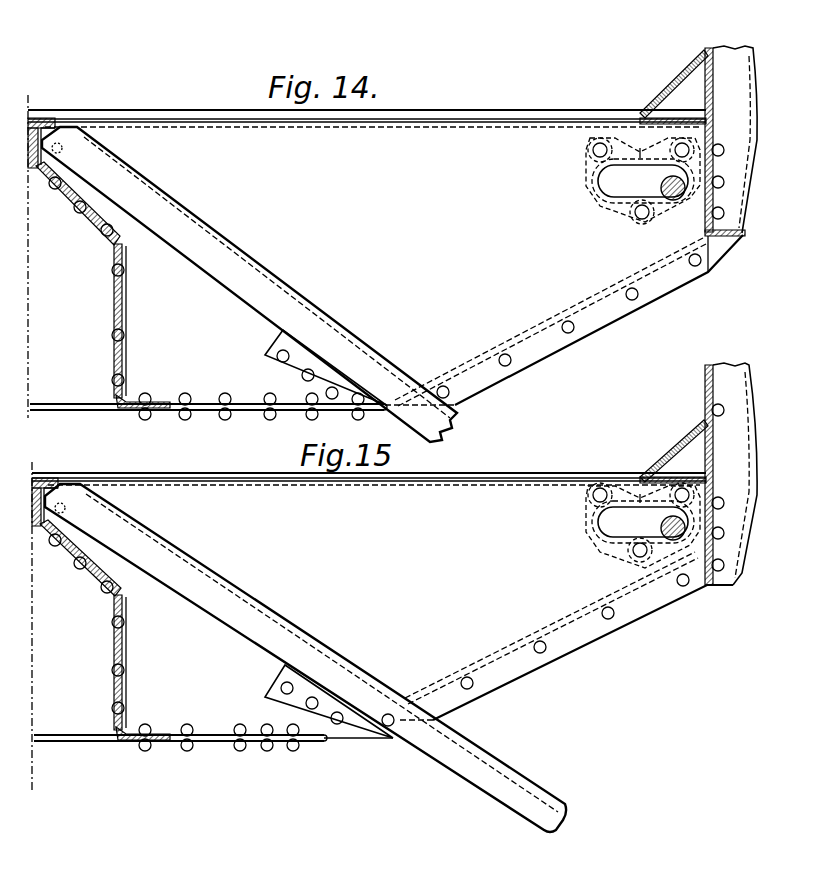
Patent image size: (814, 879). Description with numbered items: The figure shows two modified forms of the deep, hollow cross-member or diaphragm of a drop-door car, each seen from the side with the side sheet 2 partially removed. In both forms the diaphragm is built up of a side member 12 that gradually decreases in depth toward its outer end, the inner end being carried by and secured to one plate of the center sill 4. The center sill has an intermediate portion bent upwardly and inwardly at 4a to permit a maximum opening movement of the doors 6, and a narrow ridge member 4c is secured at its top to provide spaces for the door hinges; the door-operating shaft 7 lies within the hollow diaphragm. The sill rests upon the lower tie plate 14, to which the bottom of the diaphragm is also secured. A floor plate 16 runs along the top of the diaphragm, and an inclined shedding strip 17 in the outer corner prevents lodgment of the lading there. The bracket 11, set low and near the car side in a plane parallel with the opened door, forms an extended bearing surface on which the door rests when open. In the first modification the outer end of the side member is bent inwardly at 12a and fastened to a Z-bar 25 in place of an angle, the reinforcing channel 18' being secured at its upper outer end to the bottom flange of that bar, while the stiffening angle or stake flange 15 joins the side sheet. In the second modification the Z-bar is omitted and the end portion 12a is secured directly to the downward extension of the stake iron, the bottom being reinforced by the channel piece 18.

In FIG. 14, the side sheet 2 is at (715, 75).
In FIG. 15, the side sheet 2 is at (704, 382).
In FIG. 14, the center sill 4 is at (112, 313).
In FIG. 15, the center sill 4 is at (112, 652).
In FIG. 14, the upwardly and inwardly bent portion of center sill 4a is at (82, 218).
In FIG. 15, the upwardly and inwardly bent portion of center sill 4a is at (92, 584).
In FIG. 14, the ridge member 4c is at (42, 118).
In FIG. 15, the ridge member 4c is at (56, 468).
In FIG. 14, the door 6 is at (249, 284).
In FIG. 15, the door 6 is at (305, 658).
In FIG. 14, the door-operating shaft 7 is at (661, 187).
In FIG. 15, the door-operating shaft 7 is at (661, 528).
In FIG. 14, the bracket 11 is at (290, 372).
In FIG. 15, the bracket 11 is at (280, 688).
In FIG. 14, the side member 12 is at (375, 266).
In FIG. 15, the side member 12 is at (374, 602).
In FIG. 15, the inwardly bent end portion 12a is at (714, 551).
In FIG. 14, the lower tie plate 14 is at (222, 412).
In FIG. 15, the lower tie plate 14 is at (290, 745).
In FIG. 14, the stiffening angle 15 is at (735, 139).
In FIG. 15, the stiffening angle 15 is at (735, 474).
In FIG. 14, the floor plate 16 is at (443, 118).
In FIG. 15, the floor plate 16 is at (481, 478).
In FIG. 14, the inclined shedding strip 17 is at (684, 84).
In FIG. 15, the inclined shedding strip 17 is at (678, 456).
In FIG. 15, the channel piece 18 is at (557, 650).
In FIG. 14, the reinforcing channel 18' is at (590, 320).
In FIG. 14, the Z-bar 25 is at (714, 167).